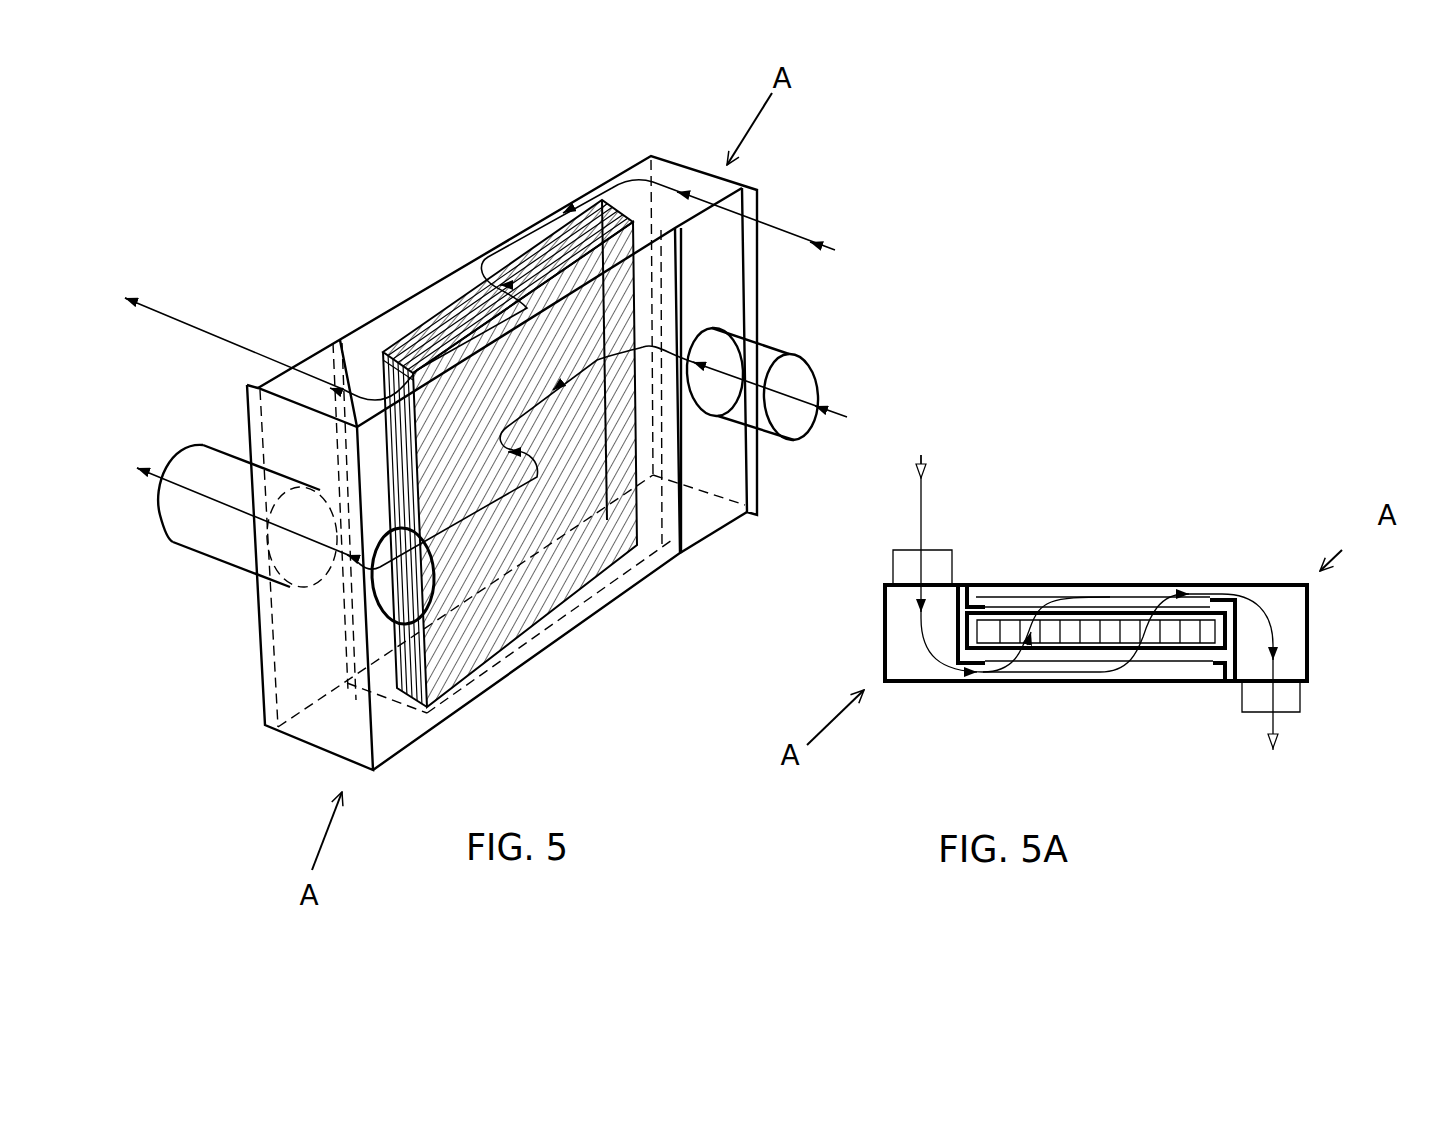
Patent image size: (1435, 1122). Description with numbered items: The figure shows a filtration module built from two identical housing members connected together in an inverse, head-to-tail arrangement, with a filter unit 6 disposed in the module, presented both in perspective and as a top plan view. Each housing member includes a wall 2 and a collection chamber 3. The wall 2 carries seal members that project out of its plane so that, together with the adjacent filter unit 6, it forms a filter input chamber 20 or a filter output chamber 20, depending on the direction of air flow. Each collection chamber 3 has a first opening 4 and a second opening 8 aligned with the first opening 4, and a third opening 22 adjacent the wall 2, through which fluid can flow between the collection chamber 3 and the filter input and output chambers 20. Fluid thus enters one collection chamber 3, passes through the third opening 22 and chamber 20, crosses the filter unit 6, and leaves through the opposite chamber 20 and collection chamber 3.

The wall 2 is at (1089, 580).
The collection chamber 3 is at (903, 630).
The first opening 4 is at (937, 576).
The filter unit 6 is at (1053, 636).
The second opening 8 is at (1277, 582).
The filter input chamber 20 is at (1010, 594).
The third opening 22 is at (1224, 597).